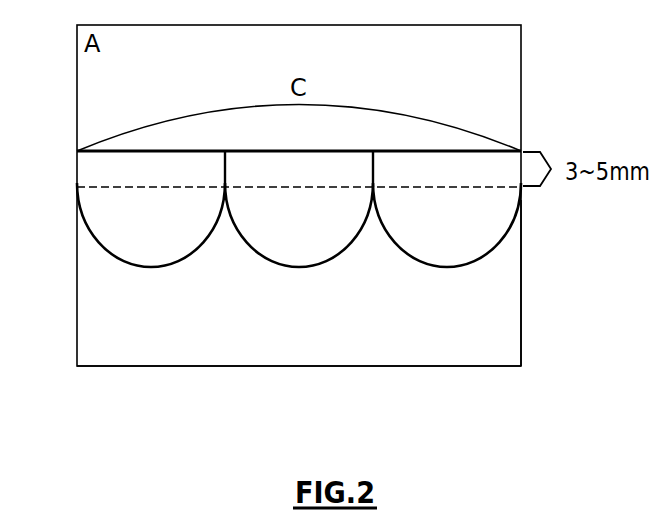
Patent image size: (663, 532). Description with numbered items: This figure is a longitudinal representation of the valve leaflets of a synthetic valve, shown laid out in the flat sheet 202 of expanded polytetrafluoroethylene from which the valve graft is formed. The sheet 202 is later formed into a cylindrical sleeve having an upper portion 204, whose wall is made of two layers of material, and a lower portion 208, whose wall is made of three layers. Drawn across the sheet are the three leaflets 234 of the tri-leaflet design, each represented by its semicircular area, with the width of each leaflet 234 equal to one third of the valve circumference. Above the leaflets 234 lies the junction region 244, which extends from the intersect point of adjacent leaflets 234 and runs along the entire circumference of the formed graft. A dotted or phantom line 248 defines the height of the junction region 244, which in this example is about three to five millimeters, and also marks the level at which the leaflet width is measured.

The sheet 202 is at (507, 319).
The upper portion 204 is at (517, 53).
The lower portion 208 is at (320, 346).
The leaflets 234 is at (288, 248).
The junction region 244 is at (79, 161).
The line 248 is at (505, 188).